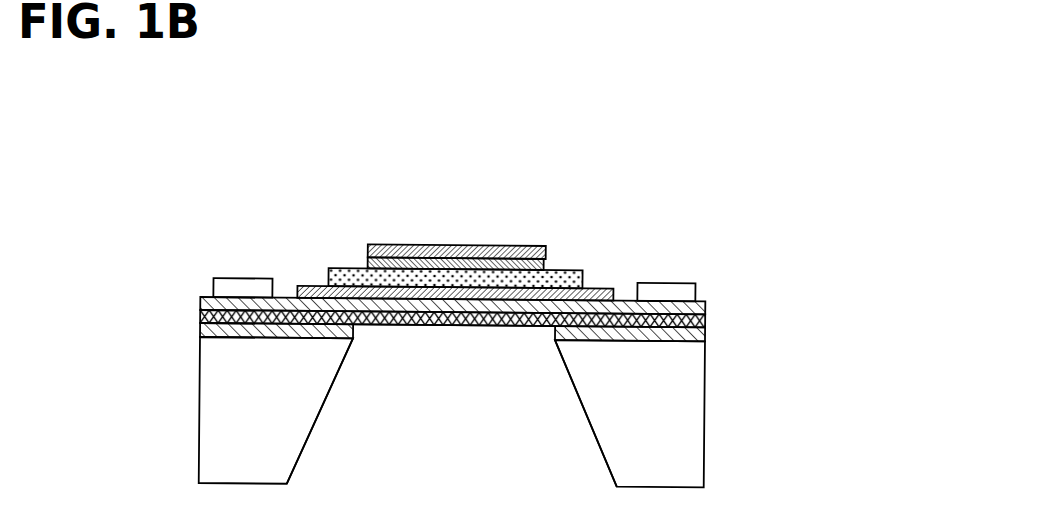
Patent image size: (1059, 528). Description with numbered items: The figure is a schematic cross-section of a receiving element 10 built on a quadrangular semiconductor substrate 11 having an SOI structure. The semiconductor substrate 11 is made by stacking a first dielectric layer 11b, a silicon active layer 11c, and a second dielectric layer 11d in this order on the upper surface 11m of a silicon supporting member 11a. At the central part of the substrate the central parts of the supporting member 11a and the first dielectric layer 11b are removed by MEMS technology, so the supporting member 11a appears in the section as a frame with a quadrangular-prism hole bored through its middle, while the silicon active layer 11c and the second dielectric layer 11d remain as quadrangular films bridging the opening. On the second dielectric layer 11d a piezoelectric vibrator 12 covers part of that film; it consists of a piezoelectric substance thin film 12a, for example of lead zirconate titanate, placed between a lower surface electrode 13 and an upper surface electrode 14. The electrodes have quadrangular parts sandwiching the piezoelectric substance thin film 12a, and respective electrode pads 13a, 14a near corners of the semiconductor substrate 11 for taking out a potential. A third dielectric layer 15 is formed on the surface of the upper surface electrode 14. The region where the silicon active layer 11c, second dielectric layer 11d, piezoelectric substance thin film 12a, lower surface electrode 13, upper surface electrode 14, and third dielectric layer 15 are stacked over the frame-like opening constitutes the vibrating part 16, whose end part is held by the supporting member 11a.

The receiving element 10 is at (629, 168).
The semiconductor substrate 11 is at (833, 247).
The supporting member 11a is at (700, 413).
The first dielectric layer 11b is at (707, 334).
The silicon active layer 11c is at (707, 316).
The second dielectric layer 11d is at (707, 301).
The upper surface 11m is at (210, 324).
The piezoelectric vibrator 12 is at (518, 166).
The piezoelectric substance thin film 12a is at (353, 275).
The lower surface electrode 13 is at (313, 293).
The electrode pad 13a is at (243, 278).
The upper surface electrode 14 is at (421, 244).
The electrode pad 14a is at (664, 279).
The third dielectric layer 15 is at (476, 243).
The vibrating part 16 is at (460, 340).